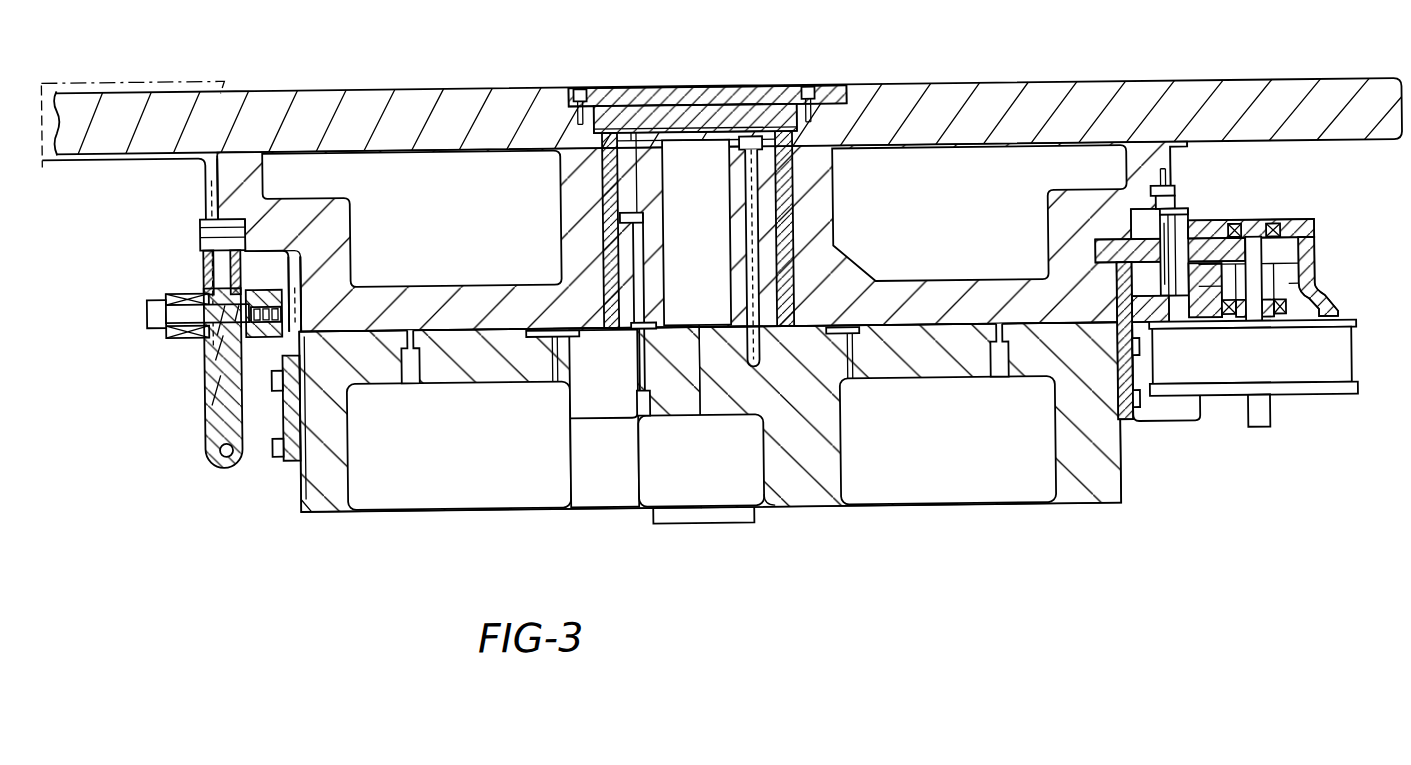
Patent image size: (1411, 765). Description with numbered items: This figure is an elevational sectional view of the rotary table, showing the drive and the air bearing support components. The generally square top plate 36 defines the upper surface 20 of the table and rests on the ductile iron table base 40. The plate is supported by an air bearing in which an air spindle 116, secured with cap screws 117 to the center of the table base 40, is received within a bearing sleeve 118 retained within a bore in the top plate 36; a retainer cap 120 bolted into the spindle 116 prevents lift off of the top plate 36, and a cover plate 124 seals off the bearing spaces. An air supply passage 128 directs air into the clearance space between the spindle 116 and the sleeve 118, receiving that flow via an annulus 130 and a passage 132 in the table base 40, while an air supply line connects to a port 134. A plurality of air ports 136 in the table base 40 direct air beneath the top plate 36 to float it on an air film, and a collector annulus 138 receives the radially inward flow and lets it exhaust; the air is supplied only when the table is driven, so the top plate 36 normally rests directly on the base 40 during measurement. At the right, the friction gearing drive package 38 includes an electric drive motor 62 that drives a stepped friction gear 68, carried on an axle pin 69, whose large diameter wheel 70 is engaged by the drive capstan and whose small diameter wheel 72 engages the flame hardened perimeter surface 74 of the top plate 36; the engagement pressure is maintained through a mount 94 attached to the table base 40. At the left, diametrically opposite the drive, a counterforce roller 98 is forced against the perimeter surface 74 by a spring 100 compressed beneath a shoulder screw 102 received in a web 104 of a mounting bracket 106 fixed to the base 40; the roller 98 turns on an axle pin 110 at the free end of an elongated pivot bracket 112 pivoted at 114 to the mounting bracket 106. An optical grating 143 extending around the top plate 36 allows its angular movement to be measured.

The upper surface 20 is at (1034, 72).
The top plate 36 is at (124, 149).
The friction gearing drive package 38 is at (1322, 249).
The table base 40 is at (302, 508).
The electric drive motor 62 is at (1357, 357).
The stepped friction gear 68 is at (1150, 250).
The axle pin 69 is at (1179, 244).
The large diameter wheel 70 is at (1094, 257).
The small diameter wheel 72 is at (1160, 226).
The perimeter surface 74 is at (232, 226).
The mount 94 is at (1131, 427).
The counterforce roller 98 is at (203, 236).
The spring 100 is at (171, 291).
The shoulder screw 102 is at (149, 310).
The web 104 is at (272, 288).
The mounting bracket 106 is at (291, 453).
The axle pin 110 is at (221, 265).
The pivot bracket 112 is at (204, 394).
The pivot 114 is at (215, 452).
The air spindle 116 is at (618, 253).
The cap screws 117 is at (768, 263).
The bearing sleeve 118 is at (602, 158).
The retainer cap 120 is at (655, 108).
The cover plate 124 is at (806, 46).
The air supply passage 128 is at (635, 233).
The annulus 130 is at (656, 323).
The passage 132 is at (637, 360).
The port 134 is at (638, 415).
The air ports 136 is at (452, 313).
The collector annulus 138 is at (534, 334).
The optical grating 143 is at (217, 177).